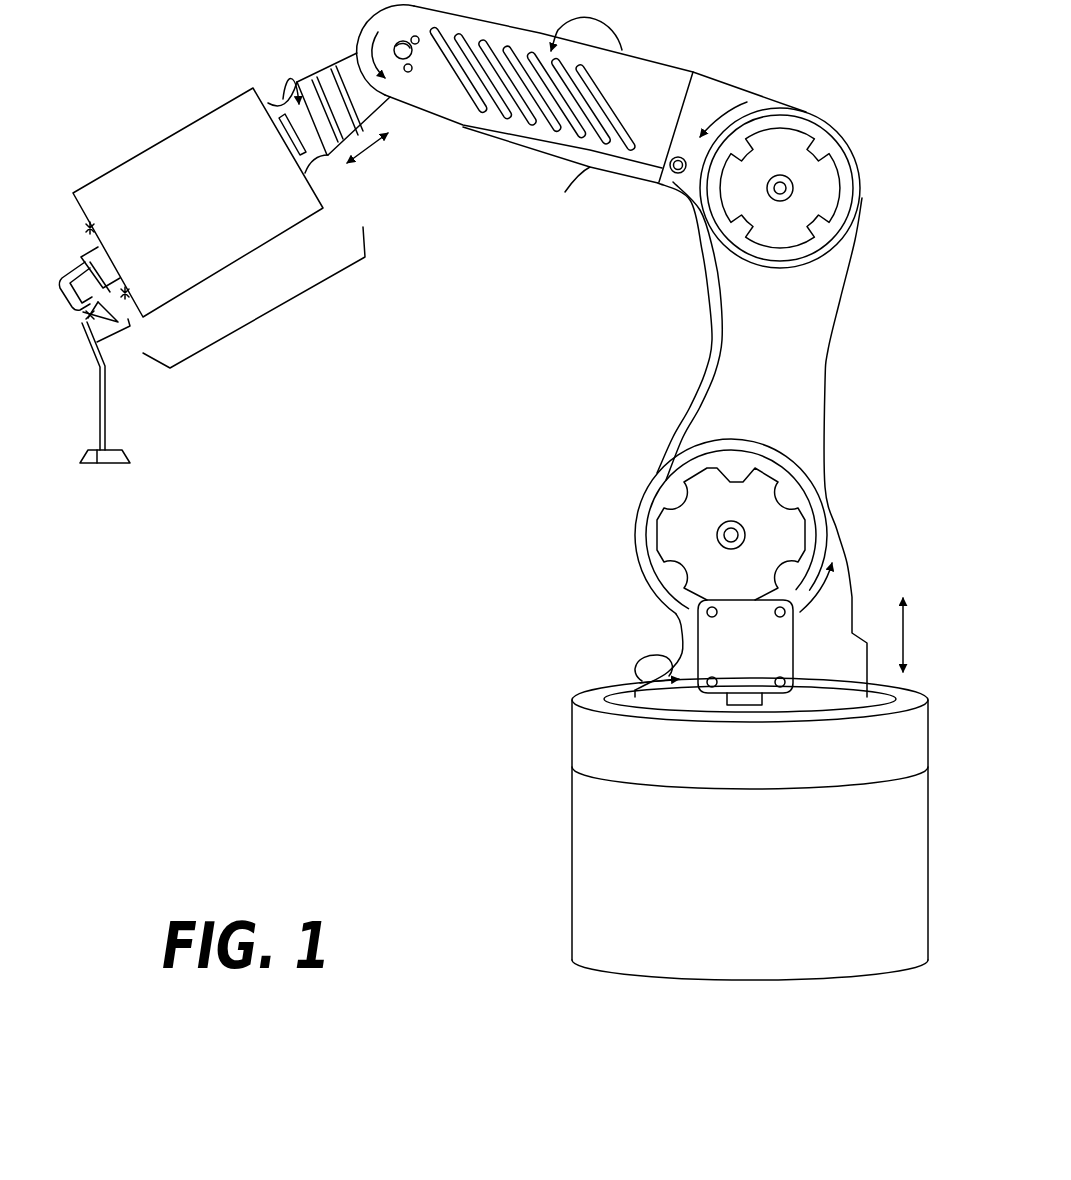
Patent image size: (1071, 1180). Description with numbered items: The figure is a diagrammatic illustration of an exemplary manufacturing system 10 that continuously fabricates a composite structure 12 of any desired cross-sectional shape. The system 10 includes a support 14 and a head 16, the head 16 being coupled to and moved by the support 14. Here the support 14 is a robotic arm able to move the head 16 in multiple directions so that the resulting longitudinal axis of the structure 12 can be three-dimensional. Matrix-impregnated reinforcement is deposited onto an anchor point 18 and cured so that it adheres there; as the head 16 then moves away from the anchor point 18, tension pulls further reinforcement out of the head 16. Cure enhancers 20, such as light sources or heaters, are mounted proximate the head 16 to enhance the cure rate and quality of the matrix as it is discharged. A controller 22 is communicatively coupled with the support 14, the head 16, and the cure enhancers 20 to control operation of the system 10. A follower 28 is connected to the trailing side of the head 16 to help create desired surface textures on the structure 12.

The system 10 is at (466, 656).
The composite structure 12 is at (107, 421).
The support 14 is at (752, 364).
The head 16 is at (283, 308).
The anchor point 18 is at (201, 201).
The cure enhancer 20 is at (90, 228).
The controller 22 is at (733, 660).
The follower 28 is at (118, 345).